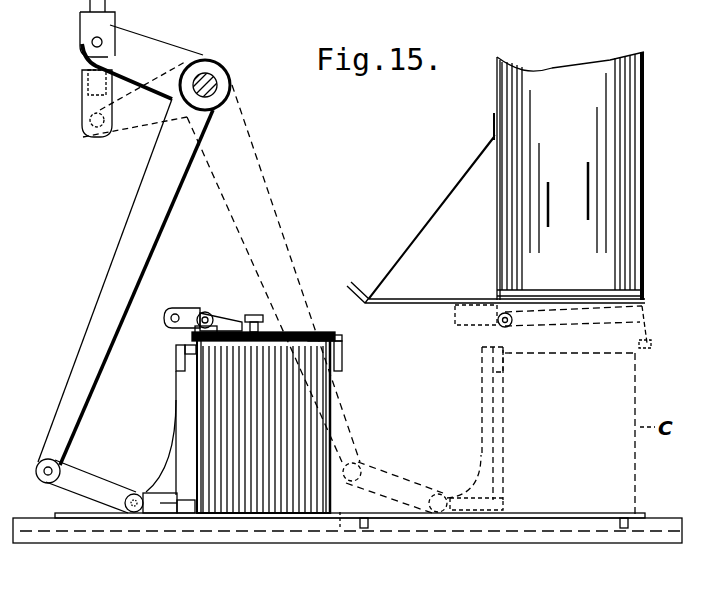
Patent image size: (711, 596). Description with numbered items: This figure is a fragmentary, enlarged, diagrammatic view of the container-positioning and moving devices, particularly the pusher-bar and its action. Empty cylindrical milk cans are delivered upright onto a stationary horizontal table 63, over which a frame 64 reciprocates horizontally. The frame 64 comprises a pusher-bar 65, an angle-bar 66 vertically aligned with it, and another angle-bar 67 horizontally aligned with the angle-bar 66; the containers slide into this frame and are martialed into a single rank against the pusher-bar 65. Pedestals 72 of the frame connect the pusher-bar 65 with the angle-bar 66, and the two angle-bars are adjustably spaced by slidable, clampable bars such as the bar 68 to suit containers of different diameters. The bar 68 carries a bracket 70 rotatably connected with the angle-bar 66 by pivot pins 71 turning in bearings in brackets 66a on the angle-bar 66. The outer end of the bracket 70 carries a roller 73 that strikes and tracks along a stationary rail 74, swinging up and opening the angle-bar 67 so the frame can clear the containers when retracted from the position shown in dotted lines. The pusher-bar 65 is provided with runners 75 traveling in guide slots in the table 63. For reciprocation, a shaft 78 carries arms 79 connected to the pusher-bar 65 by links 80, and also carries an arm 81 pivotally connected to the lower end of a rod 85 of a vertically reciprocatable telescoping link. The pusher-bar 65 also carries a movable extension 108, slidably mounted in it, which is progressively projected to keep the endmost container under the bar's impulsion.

The stationary horizontal table 63 is at (350, 530).
The frame 64 is at (330, 333).
The pusher-bar 65 is at (196, 515).
The angle-bar 66 is at (195, 356).
The bracket 66a is at (208, 311).
The angle-bar 67 is at (345, 357).
The bar 68 is at (262, 320).
The bracket 70 is at (232, 317).
The pivot pin 71 is at (211, 313).
The pedestal 72 is at (176, 422).
The roller 73 is at (180, 305).
The stationary rail 74 is at (496, 219).
The runner 75 is at (85, 508).
The shaft 78 is at (218, 93).
The arm 79 is at (75, 385).
The link 80 is at (107, 486).
The arm 81 is at (180, 54).
The rod 85 is at (110, 62).
The movable extension 108 is at (176, 512).